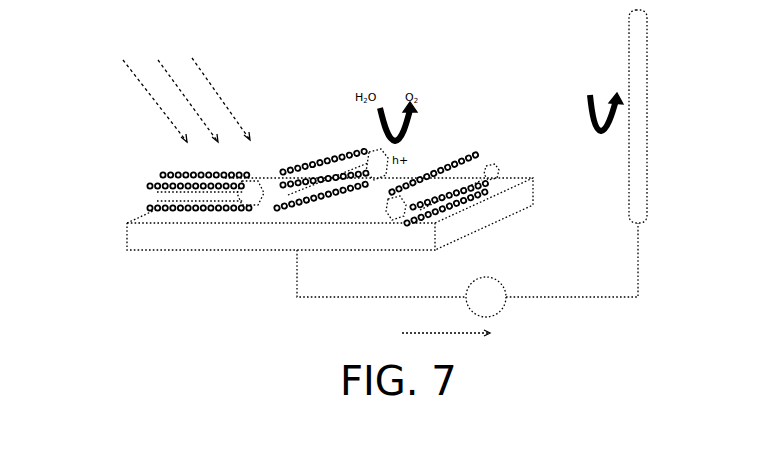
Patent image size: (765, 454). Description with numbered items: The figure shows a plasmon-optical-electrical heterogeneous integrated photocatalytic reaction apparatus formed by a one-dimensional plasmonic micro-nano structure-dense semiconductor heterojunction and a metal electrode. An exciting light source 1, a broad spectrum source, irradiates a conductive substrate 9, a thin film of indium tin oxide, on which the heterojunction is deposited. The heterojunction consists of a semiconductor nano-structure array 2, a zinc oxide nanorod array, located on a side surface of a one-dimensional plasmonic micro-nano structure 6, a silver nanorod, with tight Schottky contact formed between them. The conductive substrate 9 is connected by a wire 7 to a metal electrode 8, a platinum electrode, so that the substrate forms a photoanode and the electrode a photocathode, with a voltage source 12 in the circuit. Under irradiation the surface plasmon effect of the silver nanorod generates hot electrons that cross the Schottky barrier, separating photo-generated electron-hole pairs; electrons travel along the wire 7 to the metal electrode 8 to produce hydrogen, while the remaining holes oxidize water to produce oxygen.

The exciting light source 1 is at (197, 68).
The semiconductor nano-structure array 2 is at (286, 186).
The one-dimensional plasmonic micro-nano structure 6 is at (155, 196).
The wire 7 is at (638, 276).
The metal electrode 8 is at (648, 116).
The conductive substrate 9 is at (125, 235).
The voltage source 12 is at (503, 309).